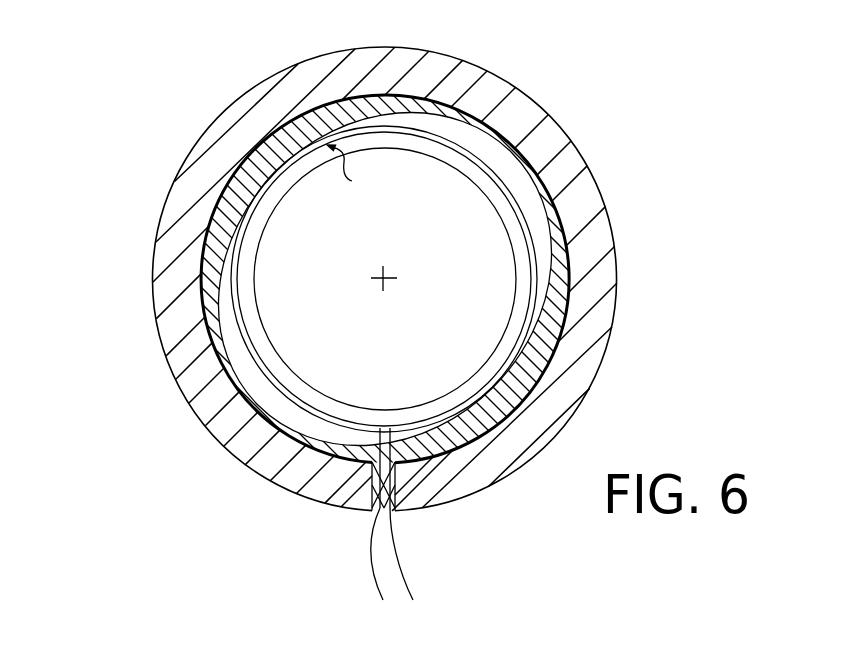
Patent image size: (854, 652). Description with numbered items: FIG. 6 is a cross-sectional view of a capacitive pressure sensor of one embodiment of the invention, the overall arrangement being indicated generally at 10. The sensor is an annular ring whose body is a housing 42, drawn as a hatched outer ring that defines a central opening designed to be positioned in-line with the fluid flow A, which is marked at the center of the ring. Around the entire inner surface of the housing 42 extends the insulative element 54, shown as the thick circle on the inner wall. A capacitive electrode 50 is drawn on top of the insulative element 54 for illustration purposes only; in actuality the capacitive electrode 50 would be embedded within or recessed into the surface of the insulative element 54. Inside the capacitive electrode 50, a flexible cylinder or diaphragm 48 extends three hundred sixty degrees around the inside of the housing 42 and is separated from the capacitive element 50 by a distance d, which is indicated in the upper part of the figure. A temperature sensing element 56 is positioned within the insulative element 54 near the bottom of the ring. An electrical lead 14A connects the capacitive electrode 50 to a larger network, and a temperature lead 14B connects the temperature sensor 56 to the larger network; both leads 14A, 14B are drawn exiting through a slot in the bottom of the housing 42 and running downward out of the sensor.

The transducer assembly 10 is at (412, 322).
The housing 42 is at (178, 355).
The diaphragm 48 is at (382, 150).
The capacitive electrode 50 is at (281, 161).
The insulative element 54 is at (205, 277).
The temperature sensing element 56 is at (427, 438).
The electrical lead 14A is at (367, 550).
The temperature lead 14B is at (397, 570).
The fluid flow A is at (386, 273).
The distance d is at (346, 168).